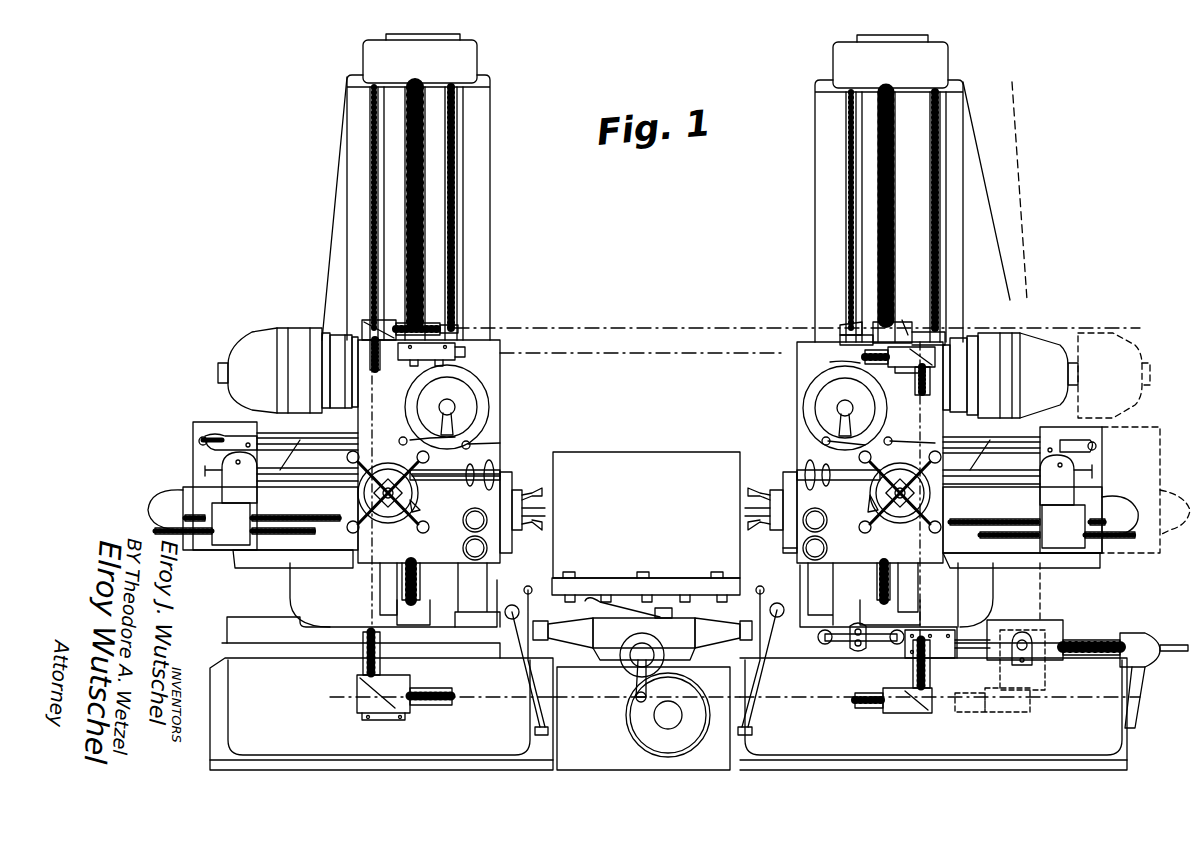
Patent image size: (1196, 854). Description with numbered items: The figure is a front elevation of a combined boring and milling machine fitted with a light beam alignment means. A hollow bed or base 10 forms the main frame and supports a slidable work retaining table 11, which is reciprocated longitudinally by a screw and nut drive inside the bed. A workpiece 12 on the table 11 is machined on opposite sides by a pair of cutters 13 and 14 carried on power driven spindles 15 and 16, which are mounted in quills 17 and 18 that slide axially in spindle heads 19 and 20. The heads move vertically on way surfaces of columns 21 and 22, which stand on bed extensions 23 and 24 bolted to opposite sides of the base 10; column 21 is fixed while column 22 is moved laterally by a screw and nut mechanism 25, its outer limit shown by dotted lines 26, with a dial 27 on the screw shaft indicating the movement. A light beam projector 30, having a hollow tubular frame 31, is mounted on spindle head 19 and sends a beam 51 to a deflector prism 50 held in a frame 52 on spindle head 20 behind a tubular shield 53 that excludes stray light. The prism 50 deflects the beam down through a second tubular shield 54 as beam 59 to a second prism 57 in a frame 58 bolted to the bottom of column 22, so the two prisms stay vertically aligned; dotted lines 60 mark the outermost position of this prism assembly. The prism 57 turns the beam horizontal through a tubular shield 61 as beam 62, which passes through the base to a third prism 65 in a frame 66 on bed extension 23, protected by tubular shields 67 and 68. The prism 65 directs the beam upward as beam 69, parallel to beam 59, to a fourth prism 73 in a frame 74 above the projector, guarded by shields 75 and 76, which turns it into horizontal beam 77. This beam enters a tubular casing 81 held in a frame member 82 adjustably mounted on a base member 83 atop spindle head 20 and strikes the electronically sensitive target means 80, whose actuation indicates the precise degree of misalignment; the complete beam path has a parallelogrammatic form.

The bed 10 is at (594, 764).
The work retaining table 11 is at (628, 603).
The workpiece 12 is at (640, 452).
The cutter 13 is at (553, 488).
The cutter 14 is at (745, 492).
The tool retaining spindle 15 is at (515, 470).
The tool retaining spindle 16 is at (780, 490).
The quill 17 is at (512, 550).
The quill 18 is at (785, 550).
The spindle supporting head 19 is at (500, 383).
The spindle supporting head 20 is at (797, 408).
The column 21 is at (483, 188).
The column 22 is at (817, 188).
The bed extension 23 is at (290, 760).
The bed extension 24 is at (965, 762).
The screw and nut mechanism 25 is at (1090, 640).
The dotted lines 26 is at (1045, 584).
The dial 27 is at (1150, 667).
The light beam projector 30 is at (418, 370).
The tubular frame 31 is at (455, 340).
The deflector prism 50 is at (950, 343).
The light beam 51 is at (655, 355).
The frame 52 is at (913, 370).
The tubular shield 53 is at (829, 362).
The tubular shield 54 is at (912, 397).
The second prism 57 is at (920, 713).
The frame 58 is at (930, 676).
The light beam 59 is at (920, 545).
The dotted lines 60 is at (1035, 703).
The tubular shield 61 is at (868, 712).
The light beam 62 is at (805, 700).
The third prism 65 is at (357, 700).
The frame 66 is at (385, 713).
The tubular shield 67 is at (440, 688).
The tubular shield 68 is at (383, 641).
The light beam 69 is at (375, 548).
The fourth prism 73 is at (363, 318).
The frame 74 is at (397, 318).
The tubular shield 75 is at (357, 356).
The tubular shield 76 is at (442, 318).
The light beam 77 is at (620, 327).
The target means 80 is at (905, 320).
The tubular casing 81 is at (850, 316).
The frame member 82 is at (893, 330).
The base member 83 is at (940, 325).